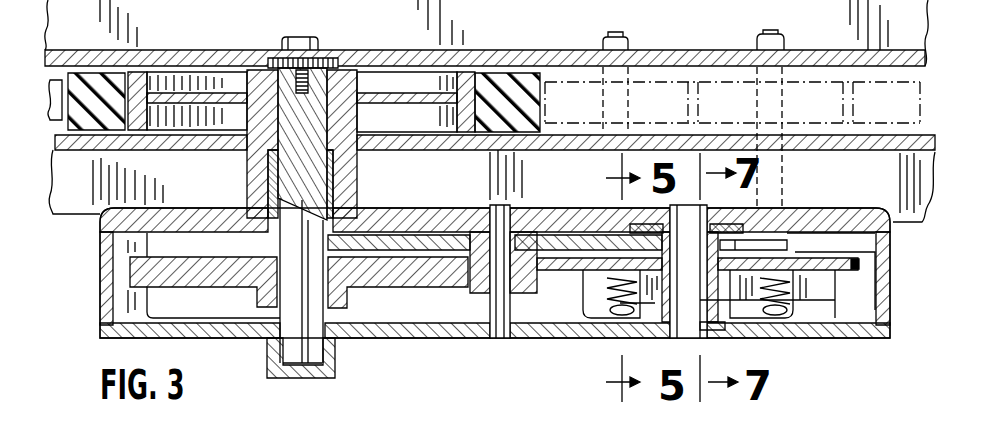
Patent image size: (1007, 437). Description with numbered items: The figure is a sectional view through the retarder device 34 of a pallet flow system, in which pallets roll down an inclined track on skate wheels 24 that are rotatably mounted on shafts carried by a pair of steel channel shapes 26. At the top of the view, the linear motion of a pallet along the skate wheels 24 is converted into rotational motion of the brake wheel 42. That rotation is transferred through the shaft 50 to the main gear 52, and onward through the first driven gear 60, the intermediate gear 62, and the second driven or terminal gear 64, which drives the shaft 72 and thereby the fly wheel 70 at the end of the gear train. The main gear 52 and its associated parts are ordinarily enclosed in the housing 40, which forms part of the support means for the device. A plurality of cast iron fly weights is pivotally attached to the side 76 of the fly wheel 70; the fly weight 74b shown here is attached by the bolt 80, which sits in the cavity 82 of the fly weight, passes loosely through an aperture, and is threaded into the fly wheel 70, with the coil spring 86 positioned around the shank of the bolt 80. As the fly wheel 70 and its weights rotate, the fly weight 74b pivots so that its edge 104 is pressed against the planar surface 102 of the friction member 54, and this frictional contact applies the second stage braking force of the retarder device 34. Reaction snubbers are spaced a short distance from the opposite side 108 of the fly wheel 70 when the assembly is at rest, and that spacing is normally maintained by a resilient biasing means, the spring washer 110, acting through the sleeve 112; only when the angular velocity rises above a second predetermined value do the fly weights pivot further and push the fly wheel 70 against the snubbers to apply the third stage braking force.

The skate wheels 24 is at (735, 100).
The steel channel shapes 26 is at (407, 151).
The retarder device 34 is at (496, 302).
The housing 40 is at (410, 208).
The brake wheel 42 is at (507, 90).
The shaft 50 is at (350, 338).
The main gear 52 is at (182, 281).
The friction member 54 is at (432, 340).
The first driven gear 60 is at (473, 306).
The intermediate gear 62 is at (548, 212).
The second driven or terminal gear 64 is at (810, 217).
The fly wheel 70 is at (858, 265).
The shaft 72 is at (693, 304).
The fly weight 74b is at (594, 280).
The side of fly wheel 76 is at (833, 278).
The bolt 80 is at (785, 313).
The cavity 82 is at (832, 318).
The coil spring 86 is at (758, 316).
The planar surface 102 is at (540, 316).
The edge of fly weight 104 is at (597, 318).
The side of fly wheel 108 is at (823, 251).
The spring washer 110 is at (730, 214).
The sleeve 112 is at (727, 322).